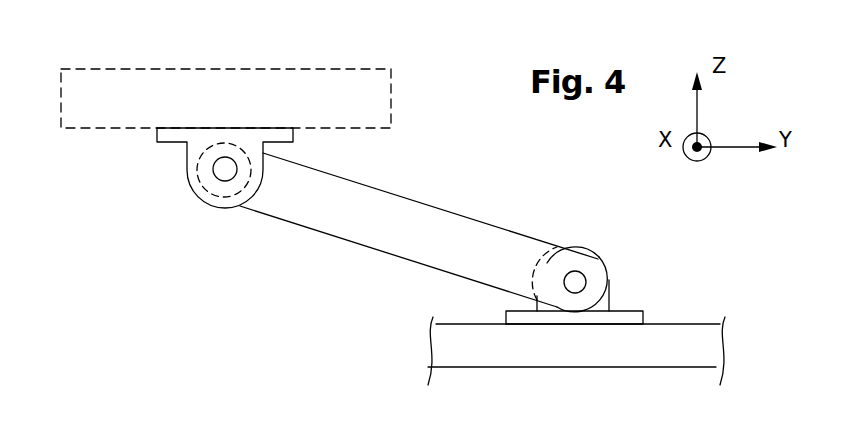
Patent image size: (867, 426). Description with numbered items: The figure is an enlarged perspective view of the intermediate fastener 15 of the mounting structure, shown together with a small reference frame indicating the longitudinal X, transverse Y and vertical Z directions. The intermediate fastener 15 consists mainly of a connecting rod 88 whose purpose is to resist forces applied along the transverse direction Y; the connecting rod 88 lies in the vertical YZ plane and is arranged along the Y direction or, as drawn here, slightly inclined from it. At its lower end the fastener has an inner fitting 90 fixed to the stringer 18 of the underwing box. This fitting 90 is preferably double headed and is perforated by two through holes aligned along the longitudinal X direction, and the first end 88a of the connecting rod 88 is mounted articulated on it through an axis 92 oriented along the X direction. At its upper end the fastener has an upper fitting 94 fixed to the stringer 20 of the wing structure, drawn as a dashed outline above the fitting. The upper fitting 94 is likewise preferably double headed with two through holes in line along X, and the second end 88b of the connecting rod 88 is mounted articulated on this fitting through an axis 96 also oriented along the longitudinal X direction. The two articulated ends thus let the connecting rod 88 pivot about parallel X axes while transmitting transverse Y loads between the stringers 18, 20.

The intermediate fastener 15 is at (447, 154).
The stringer 18 is at (678, 342).
The stringer 20 is at (317, 93).
The connecting rod 88 is at (382, 258).
The first end of the connecting rod 88a is at (525, 266).
The second end of the connecting rod 88b is at (273, 182).
The inner fitting 90 is at (598, 313).
The axis 92 is at (577, 281).
The upper fitting 94 is at (188, 150).
The axis 96 is at (225, 172).